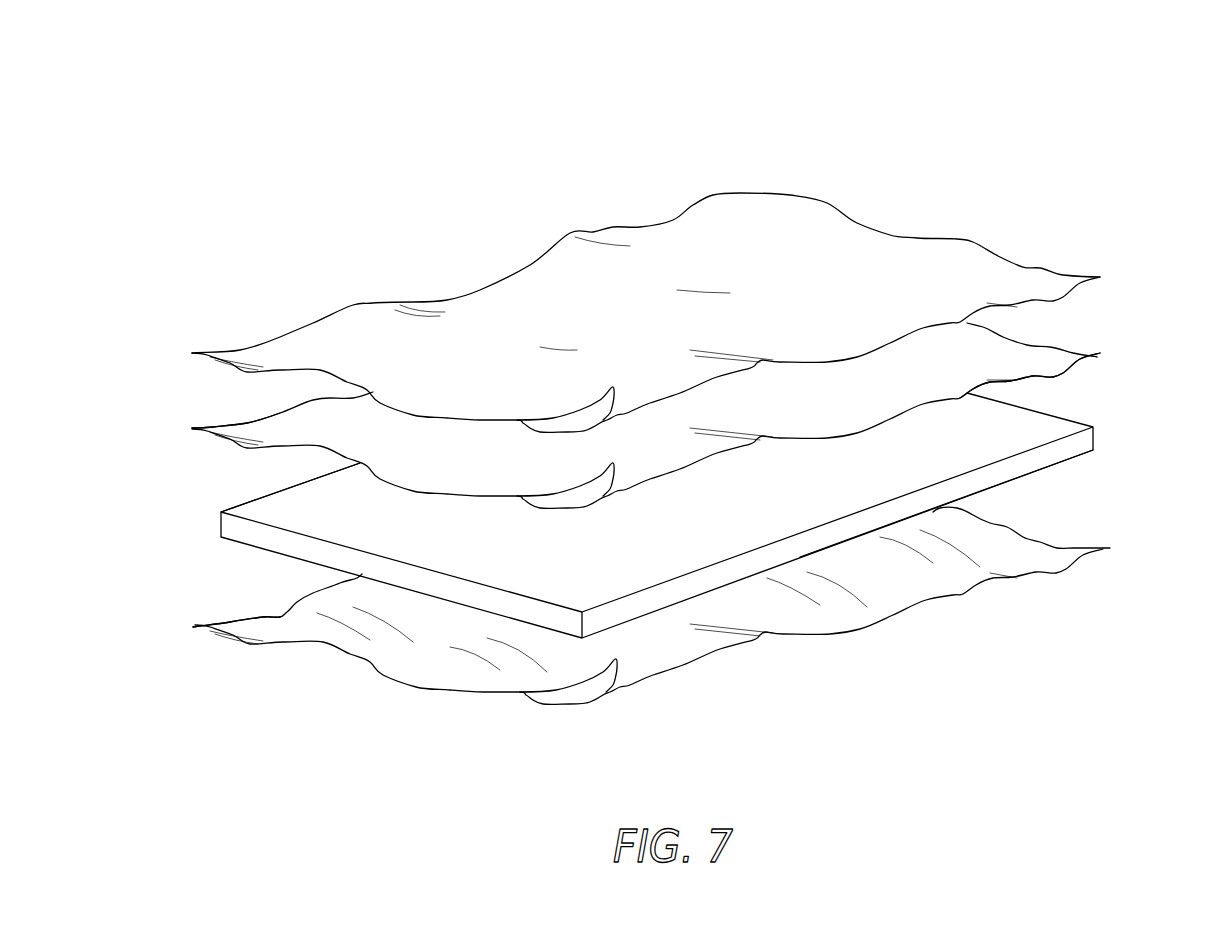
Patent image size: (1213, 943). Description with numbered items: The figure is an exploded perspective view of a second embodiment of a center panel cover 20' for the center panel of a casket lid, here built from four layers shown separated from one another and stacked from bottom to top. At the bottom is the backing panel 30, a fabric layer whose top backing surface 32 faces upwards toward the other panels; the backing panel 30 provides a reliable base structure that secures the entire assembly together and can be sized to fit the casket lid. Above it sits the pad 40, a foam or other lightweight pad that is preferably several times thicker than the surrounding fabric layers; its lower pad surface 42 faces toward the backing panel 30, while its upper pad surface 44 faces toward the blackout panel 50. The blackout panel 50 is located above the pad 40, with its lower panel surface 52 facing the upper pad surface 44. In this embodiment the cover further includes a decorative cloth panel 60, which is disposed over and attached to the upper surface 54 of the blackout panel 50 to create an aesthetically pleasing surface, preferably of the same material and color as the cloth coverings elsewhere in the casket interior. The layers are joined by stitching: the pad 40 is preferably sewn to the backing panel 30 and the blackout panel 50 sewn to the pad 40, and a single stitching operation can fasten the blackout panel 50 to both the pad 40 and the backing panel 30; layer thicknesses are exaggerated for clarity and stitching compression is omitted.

The center panel cover 20' is at (680, 365).
The backing panel 30 is at (687, 596).
The top backing surface 32 is at (285, 618).
The pad 40 is at (674, 508).
The lower pad surface 42 is at (1033, 472).
The upper pad surface 44 is at (270, 502).
The blackout panel 50 is at (672, 403).
The lower panel surface 52 is at (1028, 377).
The upper surface 54 is at (273, 427).
The decorative cloth panel 60 is at (1121, 267).